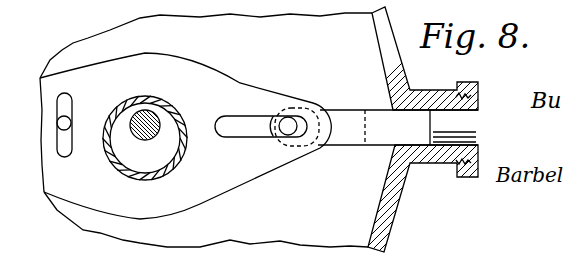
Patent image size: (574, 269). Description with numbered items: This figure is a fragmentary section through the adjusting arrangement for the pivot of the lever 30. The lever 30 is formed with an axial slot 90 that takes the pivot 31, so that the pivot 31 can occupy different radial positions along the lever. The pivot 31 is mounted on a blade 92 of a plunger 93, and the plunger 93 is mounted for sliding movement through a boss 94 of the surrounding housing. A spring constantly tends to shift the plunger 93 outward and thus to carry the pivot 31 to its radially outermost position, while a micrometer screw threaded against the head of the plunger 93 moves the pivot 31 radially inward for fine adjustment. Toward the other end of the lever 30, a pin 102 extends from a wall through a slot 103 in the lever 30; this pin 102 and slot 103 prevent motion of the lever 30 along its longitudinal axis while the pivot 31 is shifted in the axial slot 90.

The lever 30 is at (194, 58).
The pivot 31 is at (289, 124).
The axial slot 90 is at (231, 123).
The blade 92 is at (343, 141).
The plunger 93 is at (453, 127).
The boss 94 is at (435, 164).
The pin 102 is at (69, 121).
The slot 103 is at (71, 98).